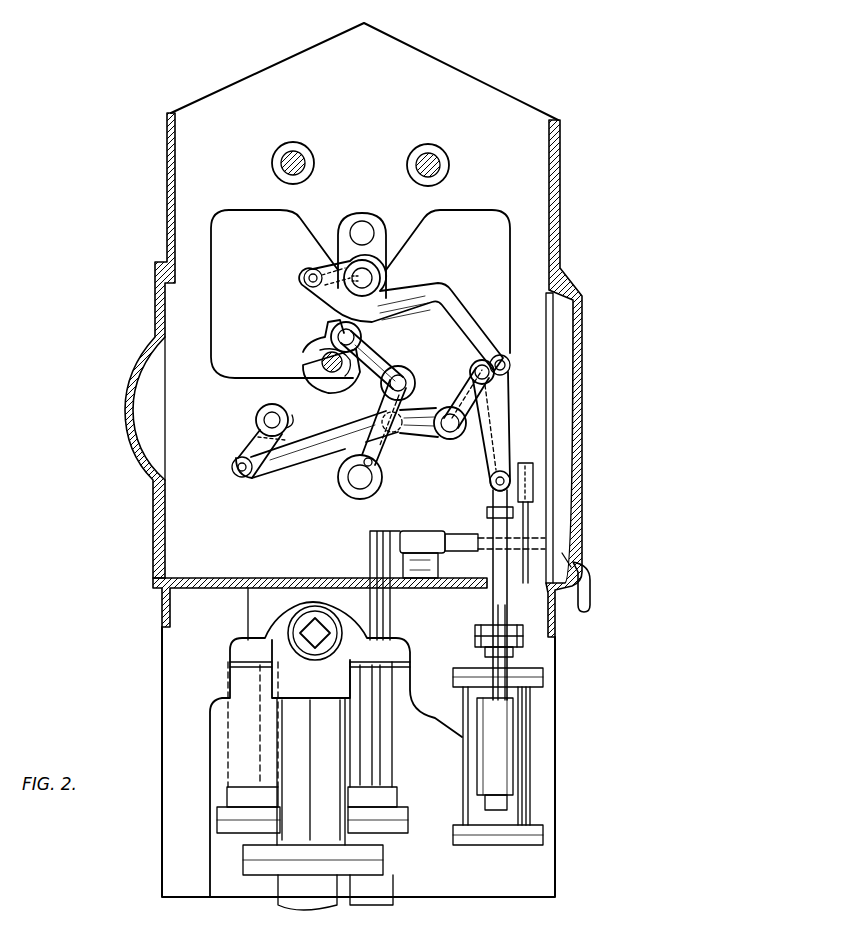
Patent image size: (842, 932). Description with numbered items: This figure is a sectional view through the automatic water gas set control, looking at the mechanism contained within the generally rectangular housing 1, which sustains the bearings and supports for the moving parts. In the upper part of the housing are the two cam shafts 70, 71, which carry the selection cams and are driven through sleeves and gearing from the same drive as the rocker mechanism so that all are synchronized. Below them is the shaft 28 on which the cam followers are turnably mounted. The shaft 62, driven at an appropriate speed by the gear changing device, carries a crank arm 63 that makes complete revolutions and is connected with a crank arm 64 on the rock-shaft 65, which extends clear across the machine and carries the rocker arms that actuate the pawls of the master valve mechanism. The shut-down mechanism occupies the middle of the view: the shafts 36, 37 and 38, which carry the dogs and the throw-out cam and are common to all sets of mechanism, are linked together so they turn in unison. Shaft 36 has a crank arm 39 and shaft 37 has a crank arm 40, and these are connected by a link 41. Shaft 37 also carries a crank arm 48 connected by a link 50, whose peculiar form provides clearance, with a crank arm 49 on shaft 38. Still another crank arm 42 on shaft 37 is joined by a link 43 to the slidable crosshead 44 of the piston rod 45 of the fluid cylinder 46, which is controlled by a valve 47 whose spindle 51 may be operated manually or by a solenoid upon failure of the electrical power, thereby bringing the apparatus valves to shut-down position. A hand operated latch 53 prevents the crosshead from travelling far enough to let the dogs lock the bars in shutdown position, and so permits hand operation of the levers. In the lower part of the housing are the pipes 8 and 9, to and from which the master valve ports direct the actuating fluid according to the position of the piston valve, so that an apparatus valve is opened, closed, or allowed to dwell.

The housing 1 is at (561, 167).
The pipe 8 is at (243, 762).
The pipe 9 is at (388, 766).
The shaft 28 is at (361, 227).
The shaft 36 is at (268, 418).
The shaft 37 is at (448, 436).
The shaft 38 is at (372, 279).
The crank arm 39 is at (262, 441).
The crank arm 40 is at (410, 436).
The link 41 is at (323, 441).
The crank arm 42 is at (470, 380).
The link 43 is at (498, 410).
The slidable crosshead 44 is at (535, 468).
The piston rod 45 is at (498, 565).
The fluid cylinder 46 is at (533, 712).
The valve 47 is at (505, 782).
The crank arm 48 is at (503, 370).
The crank arm 49 is at (330, 268).
The link 50 is at (447, 291).
The spindle 51 is at (497, 613).
The hand operated latch 53 is at (590, 596).
The shaft 62 is at (320, 362).
The crank arm 63 is at (362, 343).
The crank arm 64 is at (390, 392).
The rock-shaft 65 is at (350, 478).
The cam shaft 70 is at (282, 164).
The cam shaft 71 is at (440, 165).